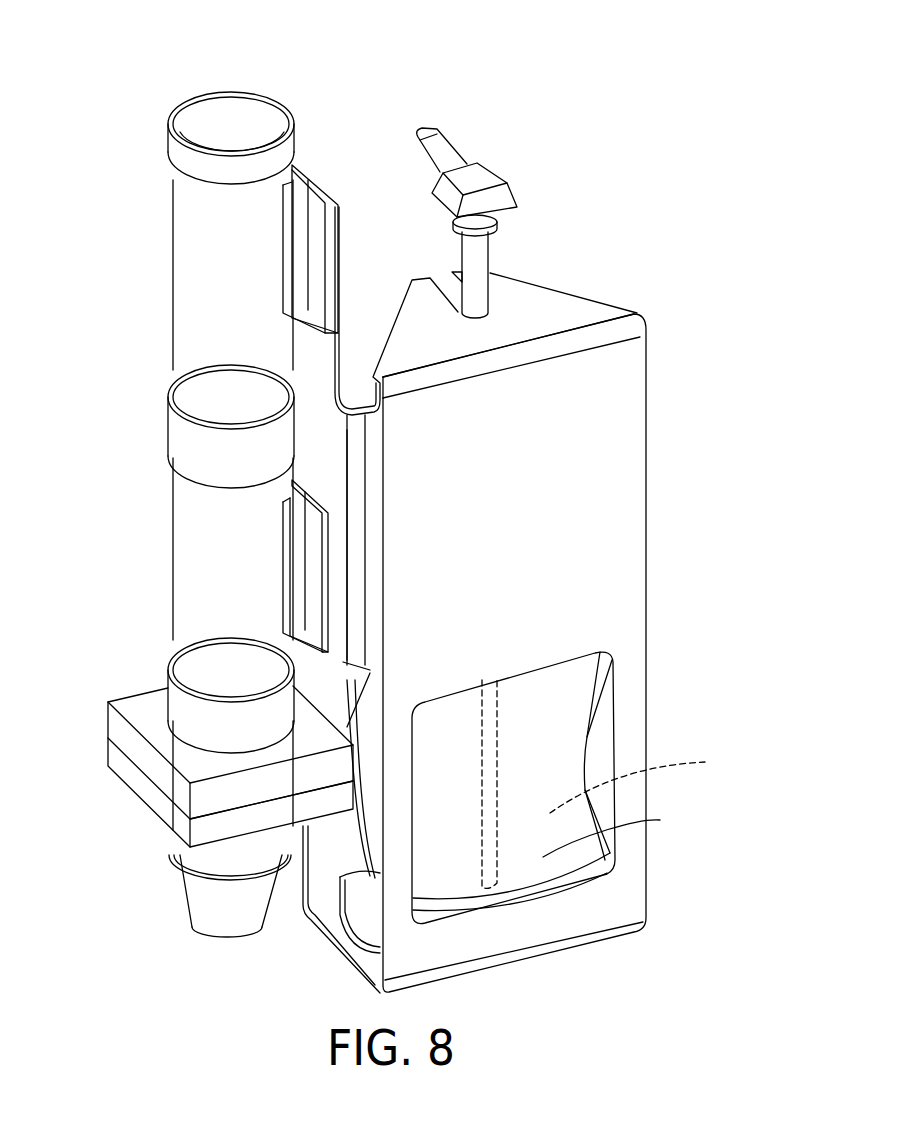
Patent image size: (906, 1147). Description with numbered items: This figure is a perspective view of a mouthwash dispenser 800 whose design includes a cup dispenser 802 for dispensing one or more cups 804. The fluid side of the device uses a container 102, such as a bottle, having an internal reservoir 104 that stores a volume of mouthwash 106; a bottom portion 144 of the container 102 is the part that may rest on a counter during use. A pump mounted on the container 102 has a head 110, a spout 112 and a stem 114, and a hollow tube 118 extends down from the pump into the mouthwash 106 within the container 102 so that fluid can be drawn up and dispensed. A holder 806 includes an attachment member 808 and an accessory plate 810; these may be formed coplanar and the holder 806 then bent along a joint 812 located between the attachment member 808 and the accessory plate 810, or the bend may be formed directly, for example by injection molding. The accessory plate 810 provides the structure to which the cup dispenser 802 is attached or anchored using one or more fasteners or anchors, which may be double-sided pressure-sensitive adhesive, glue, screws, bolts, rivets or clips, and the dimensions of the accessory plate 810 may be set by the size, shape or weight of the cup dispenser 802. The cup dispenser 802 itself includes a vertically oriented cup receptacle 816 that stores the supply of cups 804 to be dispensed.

The mouthwash dispenser 800 is at (655, 127).
The cup dispenser 802 is at (165, 143).
The cup 804 is at (202, 915).
The holder 806 is at (665, 469).
The attachment member 808 is at (617, 592).
The accessory plate 810 is at (345, 380).
The joint 812 is at (360, 525).
The cup receptacle 816 is at (183, 307).
The container 102 is at (562, 693).
The internal reservoir 104 is at (660, 820).
The mouthwash 106 is at (654, 778).
The head 110 is at (482, 165).
The spout 112 is at (418, 137).
The stem 114 is at (482, 253).
The hollow tube 118 is at (497, 763).
The bottom portion 144 is at (358, 925).